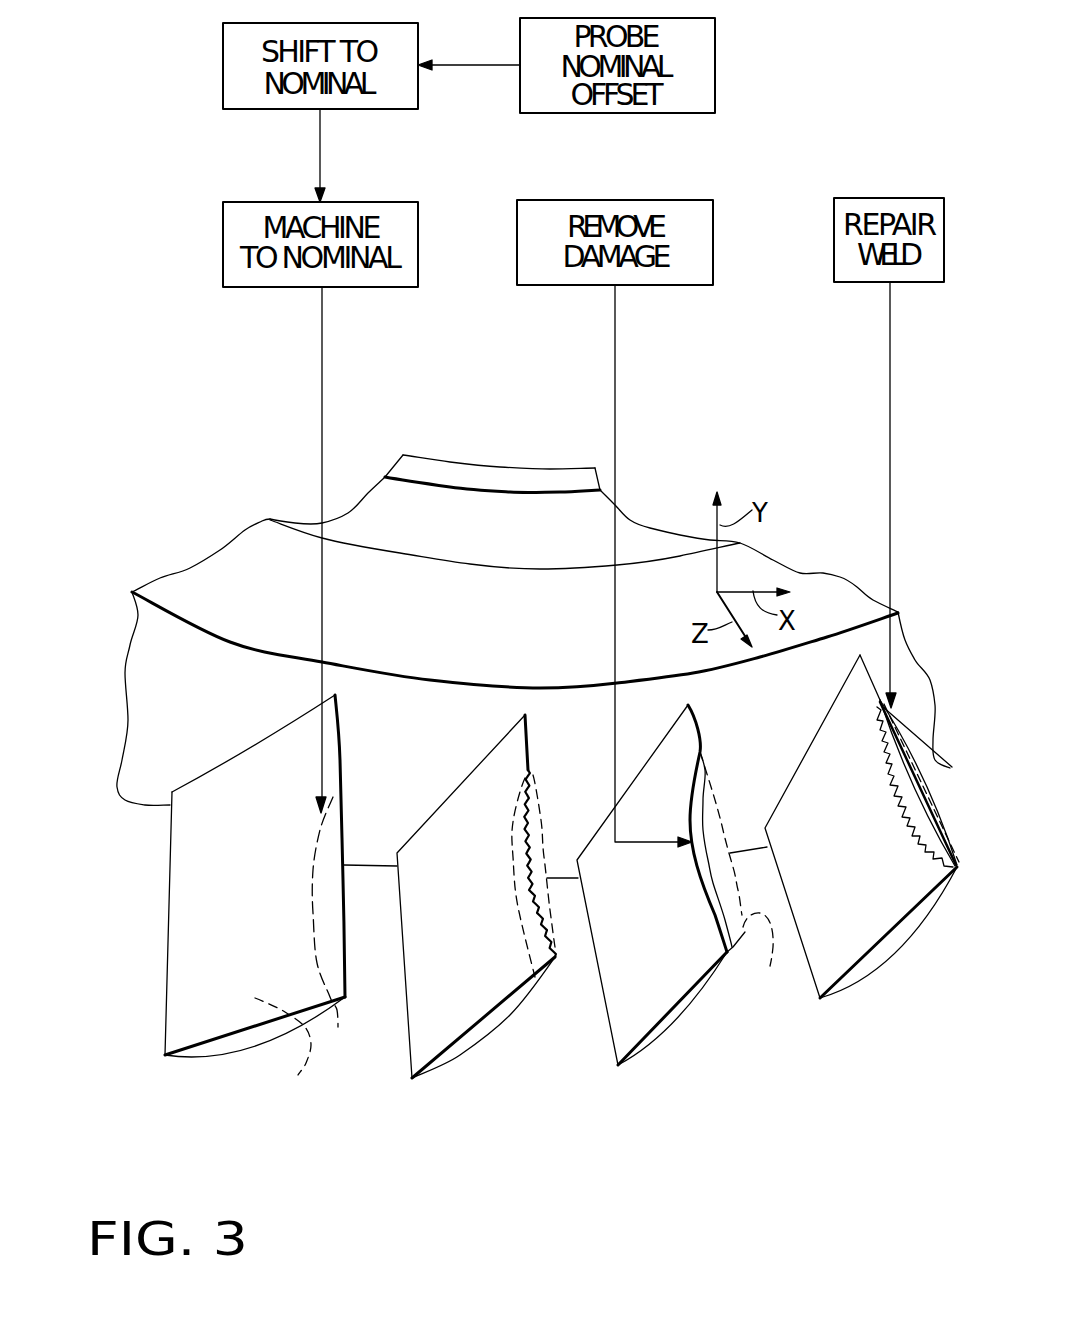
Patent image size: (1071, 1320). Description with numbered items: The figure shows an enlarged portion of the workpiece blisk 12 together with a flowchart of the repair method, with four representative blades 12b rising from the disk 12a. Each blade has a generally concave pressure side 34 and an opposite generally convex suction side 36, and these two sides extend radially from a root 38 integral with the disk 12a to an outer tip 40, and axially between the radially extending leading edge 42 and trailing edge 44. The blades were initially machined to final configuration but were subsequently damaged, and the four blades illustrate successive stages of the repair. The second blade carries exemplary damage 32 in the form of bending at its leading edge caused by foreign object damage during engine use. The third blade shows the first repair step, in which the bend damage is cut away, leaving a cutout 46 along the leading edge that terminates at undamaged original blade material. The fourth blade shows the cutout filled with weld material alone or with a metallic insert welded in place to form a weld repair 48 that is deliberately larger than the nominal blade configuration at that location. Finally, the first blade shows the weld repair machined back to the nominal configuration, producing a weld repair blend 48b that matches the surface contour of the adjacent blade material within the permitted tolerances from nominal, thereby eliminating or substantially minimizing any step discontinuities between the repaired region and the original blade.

The workpiece blisk 12 is at (925, 640).
The disk 12a is at (460, 647).
The blades 12b is at (463, 1050).
The damage 32 is at (525, 892).
The pressure side 34 is at (195, 1033).
The suction side 36 is at (291, 1077).
The root 38 is at (243, 752).
The tip 40 is at (213, 1050).
The leading edge 42 is at (338, 758).
The trailing edge 44 is at (167, 924).
The cutout 46 is at (338, 1028).
The weld repair 48 is at (920, 790).
The weld repair blend 48b is at (328, 893).